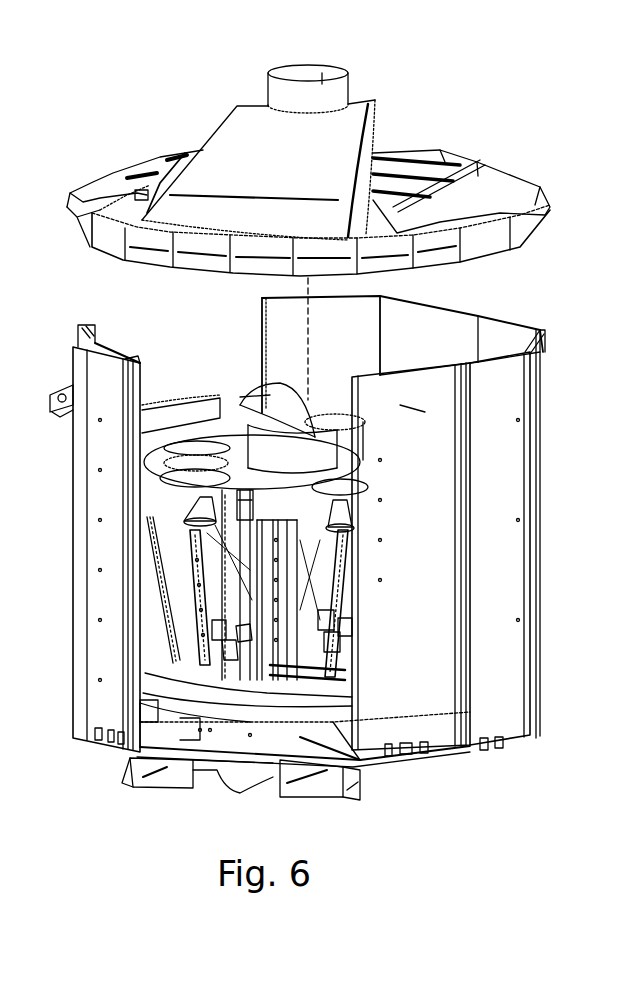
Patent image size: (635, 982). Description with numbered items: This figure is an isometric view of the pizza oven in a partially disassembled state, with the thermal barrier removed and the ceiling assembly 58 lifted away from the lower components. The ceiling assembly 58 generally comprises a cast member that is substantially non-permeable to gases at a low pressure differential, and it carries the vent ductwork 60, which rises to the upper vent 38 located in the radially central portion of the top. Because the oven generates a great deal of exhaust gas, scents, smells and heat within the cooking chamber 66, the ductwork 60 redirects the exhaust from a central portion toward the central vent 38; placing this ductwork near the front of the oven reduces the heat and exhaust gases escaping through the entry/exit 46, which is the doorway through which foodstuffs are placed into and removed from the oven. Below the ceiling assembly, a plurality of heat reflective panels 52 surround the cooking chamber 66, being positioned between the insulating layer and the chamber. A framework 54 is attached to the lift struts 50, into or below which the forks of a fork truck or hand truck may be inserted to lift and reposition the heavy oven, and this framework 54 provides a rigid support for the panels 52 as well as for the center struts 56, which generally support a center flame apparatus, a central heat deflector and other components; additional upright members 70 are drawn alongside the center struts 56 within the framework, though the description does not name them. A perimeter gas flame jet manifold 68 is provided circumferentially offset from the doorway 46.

The upper vent 38 is at (352, 84).
The vent ductwork 60 is at (360, 147).
The ceiling assembly 58 is at (548, 202).
The cooking chamber 66 is at (463, 328).
The heat reflective panels 52 is at (358, 352).
The perimeter gas flame jet manifold 68 is at (140, 363).
The entry/exit 46 is at (192, 410).
The center struts 56 is at (188, 575).
The guide rail 70 is at (157, 597).
The framework 54 is at (118, 745).
The lift struts 50 is at (235, 770).